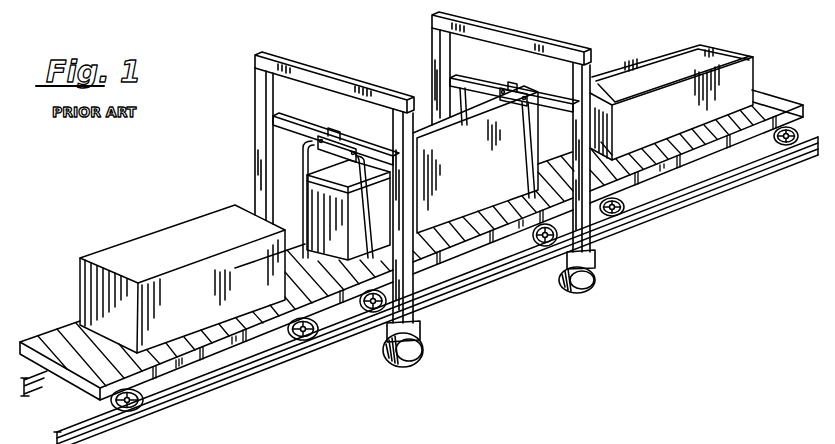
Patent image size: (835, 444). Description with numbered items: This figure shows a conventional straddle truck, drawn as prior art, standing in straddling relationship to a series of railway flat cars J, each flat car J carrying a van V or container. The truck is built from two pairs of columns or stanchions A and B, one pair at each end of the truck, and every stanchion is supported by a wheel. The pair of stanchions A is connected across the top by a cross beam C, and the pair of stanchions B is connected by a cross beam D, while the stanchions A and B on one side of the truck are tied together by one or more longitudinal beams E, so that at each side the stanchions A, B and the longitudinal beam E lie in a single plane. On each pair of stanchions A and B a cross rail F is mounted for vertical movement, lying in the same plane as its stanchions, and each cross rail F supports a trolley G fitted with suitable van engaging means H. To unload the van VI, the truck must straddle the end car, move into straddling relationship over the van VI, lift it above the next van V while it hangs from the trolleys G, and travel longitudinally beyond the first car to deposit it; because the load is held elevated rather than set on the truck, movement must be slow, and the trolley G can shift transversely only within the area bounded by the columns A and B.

The stanchions A is at (255, 156).
The stanchions B is at (429, 43).
The cross beam C is at (292, 62).
The cross beam D is at (509, 19).
The longitudinal beam E is at (490, 284).
The cross rail F is at (350, 134).
The trolley G is at (337, 140).
The van engaging means H is at (369, 212).
The flat cars J is at (227, 353).
The van V is at (654, 64).
The van VI is at (422, 128).